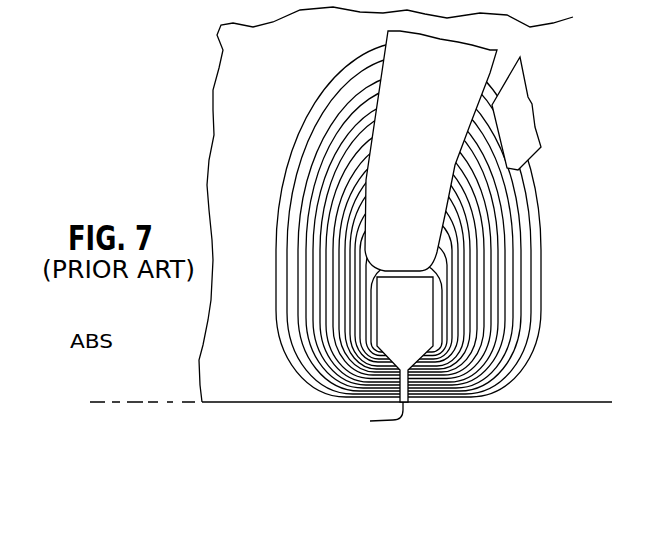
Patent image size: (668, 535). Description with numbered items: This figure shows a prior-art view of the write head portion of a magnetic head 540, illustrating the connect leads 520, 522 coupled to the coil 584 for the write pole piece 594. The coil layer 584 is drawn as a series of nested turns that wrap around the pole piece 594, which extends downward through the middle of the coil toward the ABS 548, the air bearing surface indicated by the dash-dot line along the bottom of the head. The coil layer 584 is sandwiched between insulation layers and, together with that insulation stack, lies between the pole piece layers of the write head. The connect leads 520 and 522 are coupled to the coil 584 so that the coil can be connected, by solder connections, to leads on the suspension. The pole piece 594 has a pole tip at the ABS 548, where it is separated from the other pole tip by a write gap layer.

The connect lead 520 is at (434, 148).
The connect lead 522 is at (532, 103).
The prior art write head 540 is at (556, 200).
The ABS 548 is at (145, 401).
The coil layer 584 is at (508, 298).
The second pole piece layer 594 is at (419, 330).